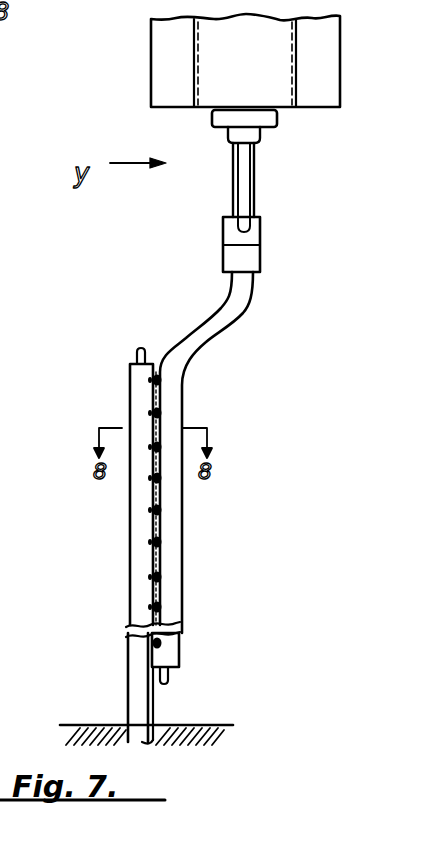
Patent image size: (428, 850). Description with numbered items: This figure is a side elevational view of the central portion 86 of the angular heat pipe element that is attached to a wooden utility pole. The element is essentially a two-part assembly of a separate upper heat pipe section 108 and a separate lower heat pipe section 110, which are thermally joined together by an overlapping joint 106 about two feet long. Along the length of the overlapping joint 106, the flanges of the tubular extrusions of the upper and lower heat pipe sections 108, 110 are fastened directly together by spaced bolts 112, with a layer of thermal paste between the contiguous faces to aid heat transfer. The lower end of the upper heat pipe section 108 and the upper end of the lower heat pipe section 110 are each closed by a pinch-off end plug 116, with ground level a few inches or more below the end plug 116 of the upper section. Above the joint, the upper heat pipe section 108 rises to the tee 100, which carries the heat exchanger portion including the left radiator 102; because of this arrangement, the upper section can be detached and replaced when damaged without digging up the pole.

The central connecting joint and tee portion 86 is at (277, 345).
The tee 100 is at (260, 240).
The left radiator 102 is at (150, 80).
The overlapping joint 106 is at (152, 488).
The upper heat pipe section 108 is at (184, 375).
The lower heat pipe section 110 is at (127, 560).
The bolts 112 is at (160, 542).
The pinch-off end plug 116 is at (170, 678).